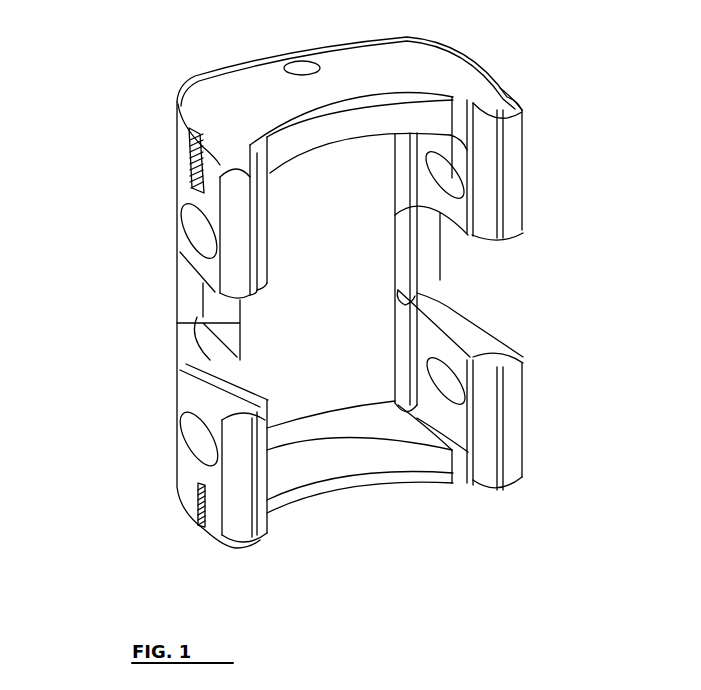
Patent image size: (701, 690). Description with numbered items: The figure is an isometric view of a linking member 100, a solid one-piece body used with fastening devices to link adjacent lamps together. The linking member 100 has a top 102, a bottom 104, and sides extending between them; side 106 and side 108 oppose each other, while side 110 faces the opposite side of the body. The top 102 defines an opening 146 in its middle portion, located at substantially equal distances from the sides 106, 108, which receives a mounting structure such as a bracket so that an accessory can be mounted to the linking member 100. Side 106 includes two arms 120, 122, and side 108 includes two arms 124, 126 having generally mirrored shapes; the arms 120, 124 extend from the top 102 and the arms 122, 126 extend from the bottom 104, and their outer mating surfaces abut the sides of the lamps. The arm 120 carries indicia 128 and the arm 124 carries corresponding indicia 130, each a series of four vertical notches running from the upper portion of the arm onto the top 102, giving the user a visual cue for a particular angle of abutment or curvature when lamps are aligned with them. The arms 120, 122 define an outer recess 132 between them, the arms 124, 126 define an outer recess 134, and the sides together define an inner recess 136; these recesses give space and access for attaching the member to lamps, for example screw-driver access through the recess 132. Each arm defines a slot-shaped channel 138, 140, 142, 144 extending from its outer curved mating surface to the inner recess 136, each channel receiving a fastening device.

The linking member 100 is at (178, 52).
The top 102 is at (377, 73).
The bottom 104 is at (362, 465).
The side 106 is at (135, 292).
The side 108 is at (568, 253).
The side 110 is at (308, 288).
The arm 120 is at (180, 197).
The arm 122 is at (193, 482).
The arm 124 is at (523, 155).
The arm 126 is at (523, 420).
The indicia 128 is at (188, 155).
The indicia 130 is at (500, 74).
The outer recess 132 is at (158, 338).
The outer recess 134 is at (463, 258).
The inner recess 136 is at (345, 245).
The channel 138 is at (212, 226).
The channel 140 is at (213, 447).
The channel 142 is at (447, 170).
The channel 144 is at (442, 378).
The opening 146 is at (302, 72).